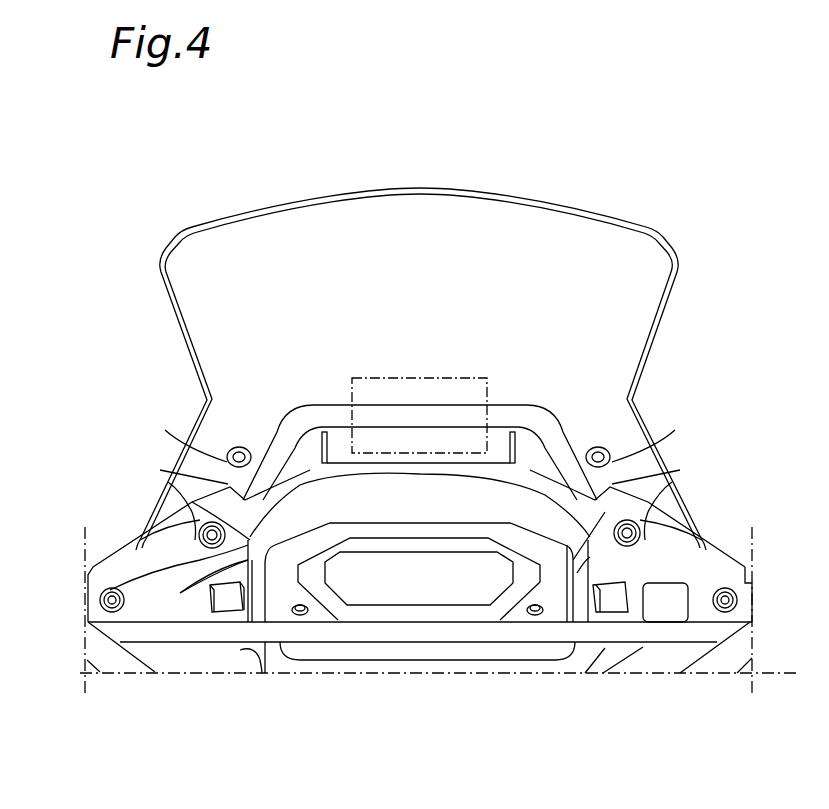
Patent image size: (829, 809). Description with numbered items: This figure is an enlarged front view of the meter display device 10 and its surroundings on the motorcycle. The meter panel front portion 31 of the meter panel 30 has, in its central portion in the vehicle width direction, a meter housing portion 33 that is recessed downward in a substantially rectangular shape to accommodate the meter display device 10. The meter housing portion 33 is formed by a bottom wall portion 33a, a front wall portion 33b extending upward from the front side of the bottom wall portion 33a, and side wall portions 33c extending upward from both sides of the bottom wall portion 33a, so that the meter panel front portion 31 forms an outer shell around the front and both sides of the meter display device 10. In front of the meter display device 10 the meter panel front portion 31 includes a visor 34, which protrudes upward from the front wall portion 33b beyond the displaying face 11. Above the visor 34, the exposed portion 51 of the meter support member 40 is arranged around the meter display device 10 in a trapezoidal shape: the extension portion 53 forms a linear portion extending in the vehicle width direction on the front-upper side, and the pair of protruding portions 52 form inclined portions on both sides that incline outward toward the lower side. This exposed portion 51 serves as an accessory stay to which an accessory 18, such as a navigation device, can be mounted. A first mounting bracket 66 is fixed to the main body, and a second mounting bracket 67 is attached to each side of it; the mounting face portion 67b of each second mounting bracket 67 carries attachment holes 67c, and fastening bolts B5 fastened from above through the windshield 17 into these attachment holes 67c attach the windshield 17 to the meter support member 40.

The meter display device 10 is at (402, 612).
The displaying face 11 is at (420, 587).
The windshield 17 is at (518, 196).
The accessory 18 is at (382, 460).
The meter panel 30 is at (155, 567).
The meter panel front portion 31 is at (110, 556).
The meter housing portion 33 is at (580, 555).
The bottom wall portion 33a is at (280, 660).
The front wall portion 33b is at (180, 593).
The side wall portions 33c is at (243, 645).
The visor 34 is at (415, 497).
The meter support member 40 is at (397, 405).
The exposed portion 51 is at (467, 405).
The protruding portions 52 is at (253, 440).
The extension portion 53 is at (365, 403).
The first mounting bracket 66 is at (316, 428).
The second mounting bracket 67 is at (190, 465).
The mounting face portion 67b is at (227, 485).
The attachment holes 67c is at (205, 445).
The fastening bolts B5 is at (236, 446).